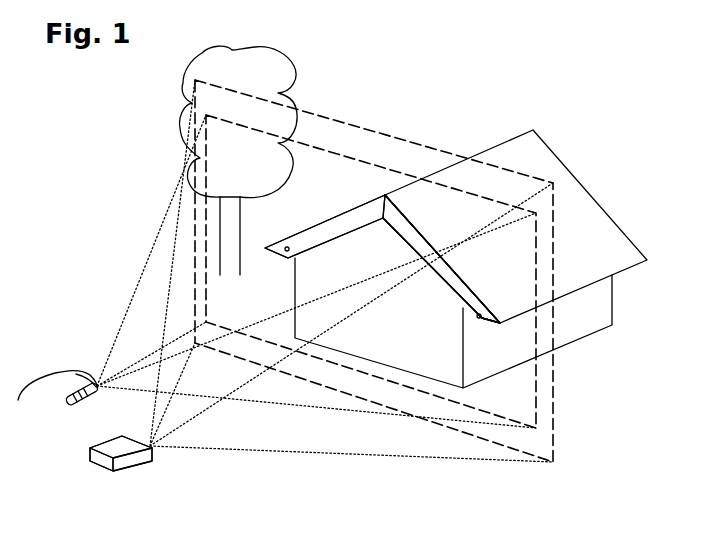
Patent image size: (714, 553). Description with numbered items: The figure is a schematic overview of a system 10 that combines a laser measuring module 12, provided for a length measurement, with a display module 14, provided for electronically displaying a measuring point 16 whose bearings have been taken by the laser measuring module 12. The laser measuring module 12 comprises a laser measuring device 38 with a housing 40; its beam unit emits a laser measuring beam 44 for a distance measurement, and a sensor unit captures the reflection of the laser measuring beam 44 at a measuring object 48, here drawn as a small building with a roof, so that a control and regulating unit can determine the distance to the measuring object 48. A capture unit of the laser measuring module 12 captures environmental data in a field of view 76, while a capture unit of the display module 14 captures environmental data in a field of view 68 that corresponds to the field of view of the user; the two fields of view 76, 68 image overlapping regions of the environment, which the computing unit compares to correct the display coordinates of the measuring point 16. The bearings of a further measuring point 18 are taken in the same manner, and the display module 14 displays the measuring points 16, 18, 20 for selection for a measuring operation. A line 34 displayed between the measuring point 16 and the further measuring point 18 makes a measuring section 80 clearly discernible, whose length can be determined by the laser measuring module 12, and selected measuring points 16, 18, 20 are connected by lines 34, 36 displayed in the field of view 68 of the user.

The system 10 is at (48, 346).
The laser measuring module 12 is at (125, 458).
The display module 14 is at (58, 405).
The measuring point 16 is at (480, 317).
The further measuring point 18 is at (384, 200).
The measuring point 20 is at (287, 248).
The line 34 is at (423, 236).
The line 36 is at (346, 210).
The laser measuring device 38 is at (121, 447).
The housing 40 is at (101, 469).
The laser measuring beam 44 is at (277, 387).
The measuring object 48 is at (590, 208).
The field of view 68 is at (537, 393).
The field of view 76 is at (553, 427).
The measuring section 80 is at (441, 259).